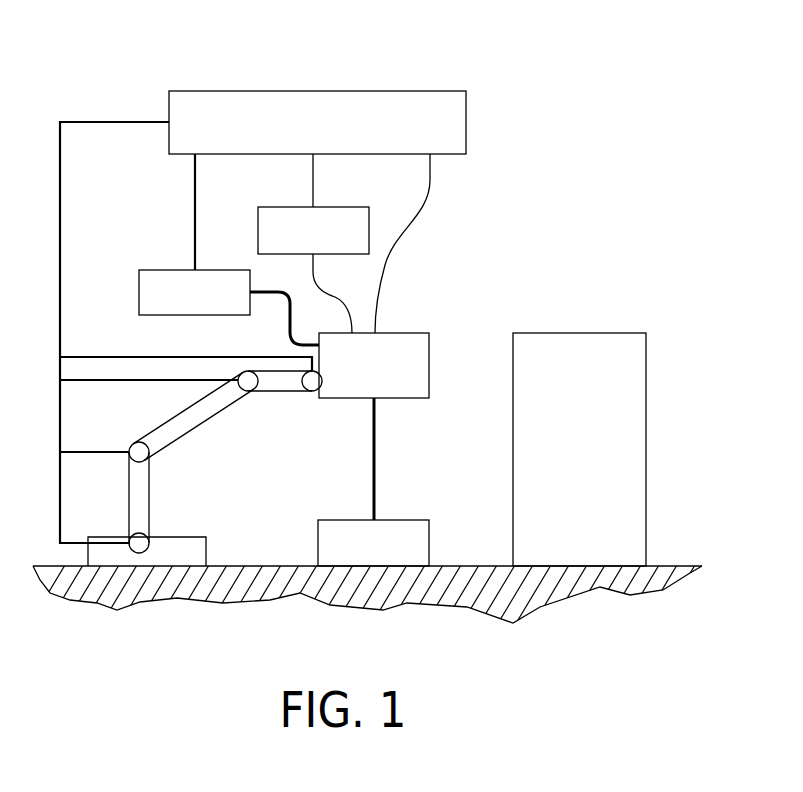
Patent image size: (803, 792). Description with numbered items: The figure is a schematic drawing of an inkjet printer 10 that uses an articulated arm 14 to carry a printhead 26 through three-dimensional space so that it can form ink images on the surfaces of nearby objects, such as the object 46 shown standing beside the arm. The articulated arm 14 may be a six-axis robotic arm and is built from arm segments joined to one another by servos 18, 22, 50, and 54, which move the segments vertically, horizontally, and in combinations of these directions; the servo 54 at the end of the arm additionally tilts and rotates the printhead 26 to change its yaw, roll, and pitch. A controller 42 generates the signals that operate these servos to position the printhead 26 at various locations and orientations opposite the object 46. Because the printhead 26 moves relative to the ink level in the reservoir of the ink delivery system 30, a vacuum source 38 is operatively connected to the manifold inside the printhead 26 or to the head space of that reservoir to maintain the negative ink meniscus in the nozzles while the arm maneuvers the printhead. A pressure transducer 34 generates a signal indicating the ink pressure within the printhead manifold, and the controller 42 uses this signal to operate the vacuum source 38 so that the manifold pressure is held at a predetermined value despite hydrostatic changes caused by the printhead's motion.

The inkjet printer 10 is at (553, 80).
The articulated arm 14 is at (240, 445).
The servo 18 is at (256, 393).
The servo 22 is at (150, 457).
The printhead 26 is at (404, 399).
The ink delivery system 30 is at (430, 542).
The pressure transducer 34 is at (160, 270).
The vacuum source 38 is at (258, 232).
The controller 42 is at (323, 91).
The object 46 is at (647, 448).
The servo 50 is at (132, 535).
The servo 54 is at (316, 390).